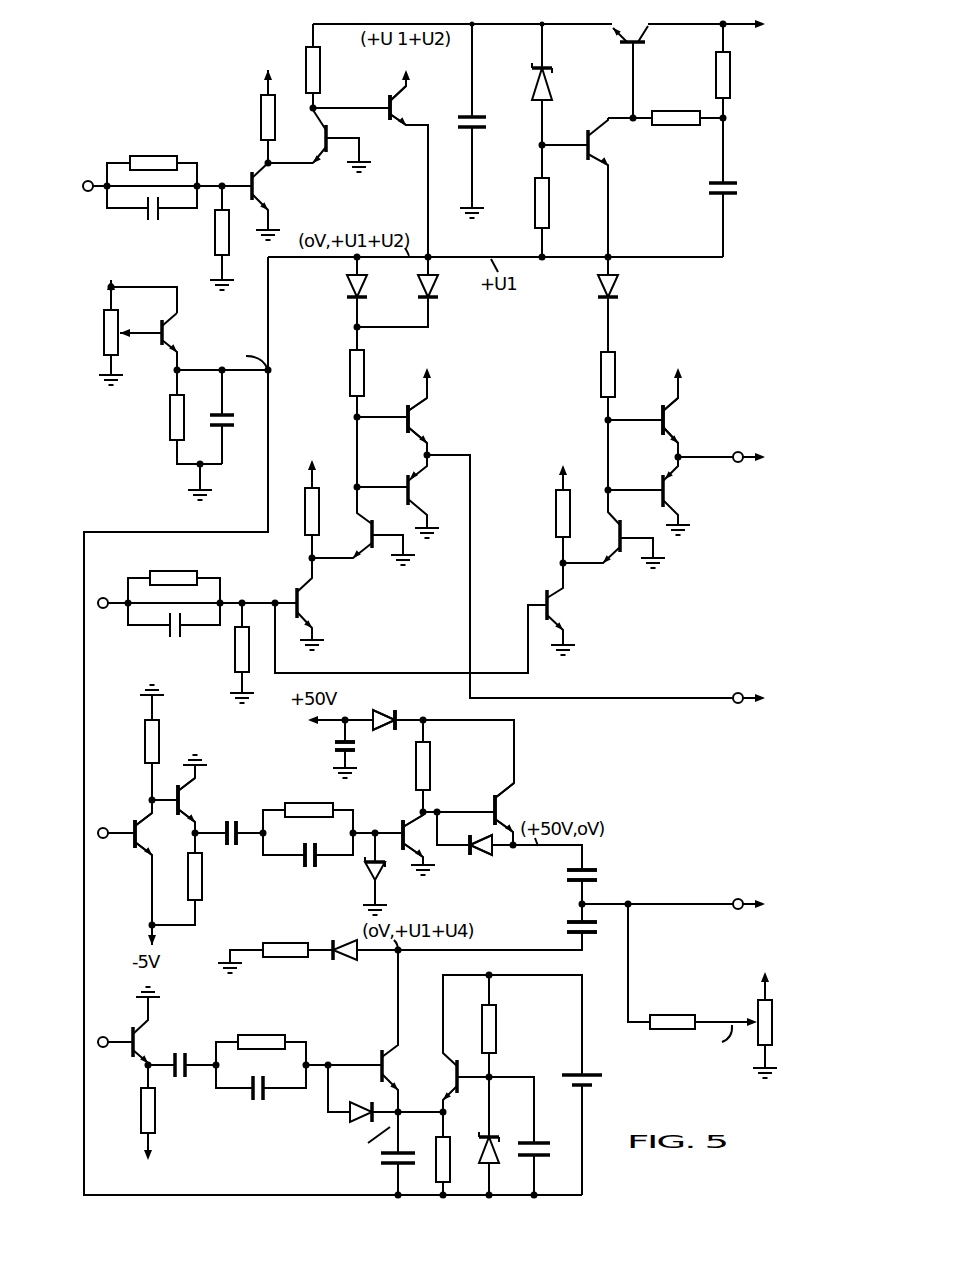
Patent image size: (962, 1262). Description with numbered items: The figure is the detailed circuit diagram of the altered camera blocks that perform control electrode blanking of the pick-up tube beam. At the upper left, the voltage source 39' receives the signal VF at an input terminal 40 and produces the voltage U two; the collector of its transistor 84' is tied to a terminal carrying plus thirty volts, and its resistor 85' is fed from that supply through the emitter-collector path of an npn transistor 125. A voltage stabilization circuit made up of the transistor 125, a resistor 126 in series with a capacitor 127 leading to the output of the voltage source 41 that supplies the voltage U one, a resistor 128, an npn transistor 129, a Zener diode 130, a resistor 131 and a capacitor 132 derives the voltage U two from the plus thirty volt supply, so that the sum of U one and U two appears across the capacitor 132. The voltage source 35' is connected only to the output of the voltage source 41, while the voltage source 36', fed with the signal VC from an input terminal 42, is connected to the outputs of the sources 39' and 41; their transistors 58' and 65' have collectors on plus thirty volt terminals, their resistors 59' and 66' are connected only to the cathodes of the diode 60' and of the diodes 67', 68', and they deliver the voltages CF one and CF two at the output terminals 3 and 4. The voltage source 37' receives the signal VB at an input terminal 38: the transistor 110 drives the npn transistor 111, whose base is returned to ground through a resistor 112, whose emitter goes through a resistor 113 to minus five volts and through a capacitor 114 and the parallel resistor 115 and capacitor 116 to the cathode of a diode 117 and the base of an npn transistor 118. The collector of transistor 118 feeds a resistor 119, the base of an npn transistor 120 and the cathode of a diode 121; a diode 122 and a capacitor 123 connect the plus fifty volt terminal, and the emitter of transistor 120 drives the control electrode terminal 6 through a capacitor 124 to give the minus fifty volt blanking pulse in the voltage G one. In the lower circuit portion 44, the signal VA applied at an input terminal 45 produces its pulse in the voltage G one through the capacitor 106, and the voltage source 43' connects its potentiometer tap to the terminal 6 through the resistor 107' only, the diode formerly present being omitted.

The voltage source 39' is at (271, 175).
The resistor 85' is at (330, 70).
The transistor 84' is at (392, 121).
The input terminal VF 40 is at (88, 181).
The diode 67' is at (336, 292).
The diode 68' is at (411, 278).
The diode 60' is at (590, 304).
The capacitor 132 is at (487, 130).
The Zener diode 130 is at (552, 78).
The resistor 131 is at (549, 222).
The npn transistor 129 is at (607, 147).
The npn transistor 125 is at (636, 46).
The resistor 128 is at (680, 127).
The resistor 126 is at (741, 66).
The capacitor 127 is at (731, 196).
The voltage source 41 is at (238, 327).
The voltage source 36' is at (426, 532).
The input terminal VC 42 is at (103, 628).
The resistor 66' is at (374, 374).
The transistor 65' is at (435, 420).
The output terminal CF2 4 is at (744, 720).
The voltage source 35' is at (654, 453).
The resistor 59' is at (624, 374).
The transistor 58' is at (691, 419).
The output terminal CF1 3 is at (744, 478).
The input terminal VB 38 is at (103, 858).
The resistor 112 is at (160, 748).
The npn transistor 111 is at (186, 805).
The transistor 110 is at (145, 833).
The resistor 113 is at (203, 893).
The capacitor 114 is at (242, 817).
The resistor 115 is at (303, 802).
The capacitor 116 is at (317, 866).
The diode 117 is at (368, 870).
The voltage source 37' is at (477, 824).
The npn transistor 118 is at (412, 857).
The resistor 119 is at (431, 769).
The npn transistor 120 is at (500, 806).
The diode 121 is at (477, 858).
The diode 122 is at (393, 698).
The capacitor 123 is at (334, 746).
The capacitor 124 is at (594, 866).
The capacitor 106 is at (594, 937).
The control electrode terminal 6 is at (744, 925).
The voltage source 43' is at (717, 1002).
The resistor 107' is at (674, 1003).
The VA input stage with floating supply 44 is at (543, 943).
The input terminal VA 45 is at (103, 1066).